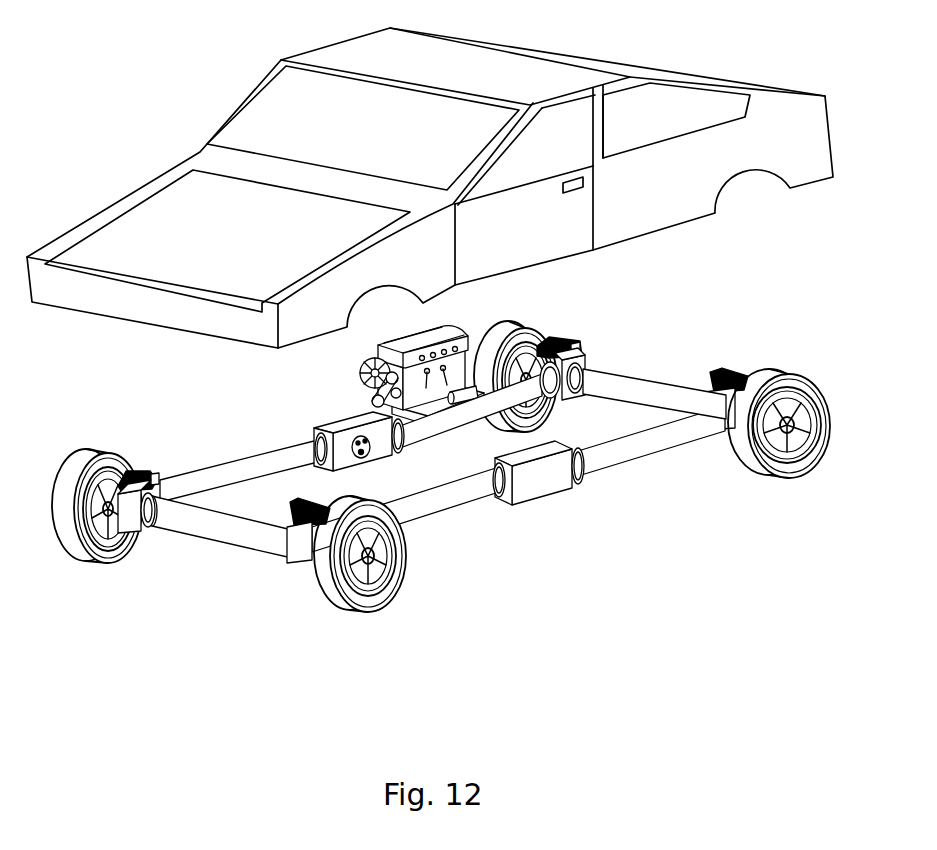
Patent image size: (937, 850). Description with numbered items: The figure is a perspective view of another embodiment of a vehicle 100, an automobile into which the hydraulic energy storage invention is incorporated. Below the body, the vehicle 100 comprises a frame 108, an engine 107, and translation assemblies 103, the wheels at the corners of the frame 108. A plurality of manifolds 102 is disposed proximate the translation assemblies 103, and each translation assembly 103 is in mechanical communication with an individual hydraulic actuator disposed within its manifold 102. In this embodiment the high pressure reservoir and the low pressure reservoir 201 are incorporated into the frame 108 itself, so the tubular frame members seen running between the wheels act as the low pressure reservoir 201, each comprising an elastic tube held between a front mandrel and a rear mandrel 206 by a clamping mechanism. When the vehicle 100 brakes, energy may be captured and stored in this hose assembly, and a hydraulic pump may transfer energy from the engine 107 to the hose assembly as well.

The vehicle 100 is at (118, 69).
The manifold 102 is at (128, 510).
The translation assembly 103 is at (829, 386).
The engine 107 is at (461, 328).
The frame 108 is at (187, 415).
The low pressure reservoir 201 is at (228, 529).
The rear mandrel 206 is at (242, 477).